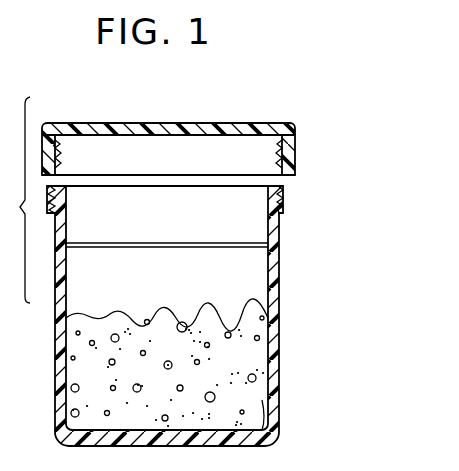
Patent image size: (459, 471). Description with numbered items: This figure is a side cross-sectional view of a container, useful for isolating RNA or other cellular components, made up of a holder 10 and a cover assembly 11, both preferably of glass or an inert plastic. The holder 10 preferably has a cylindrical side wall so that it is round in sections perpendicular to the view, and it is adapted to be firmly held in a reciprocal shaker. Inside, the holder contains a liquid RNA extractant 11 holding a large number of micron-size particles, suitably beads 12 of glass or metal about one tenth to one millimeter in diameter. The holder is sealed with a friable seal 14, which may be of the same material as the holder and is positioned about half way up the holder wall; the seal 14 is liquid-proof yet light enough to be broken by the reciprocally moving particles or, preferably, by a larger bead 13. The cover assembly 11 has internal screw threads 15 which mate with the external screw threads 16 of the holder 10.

The holder 10 is at (277, 318).
The cover assembly 11 is at (268, 117).
The beads 12 is at (257, 400).
The larger bead 13 is at (231, 337).
The friable seal 14 is at (250, 240).
The internal screw threads 15 is at (292, 158).
The external screw threads 16 is at (285, 202).